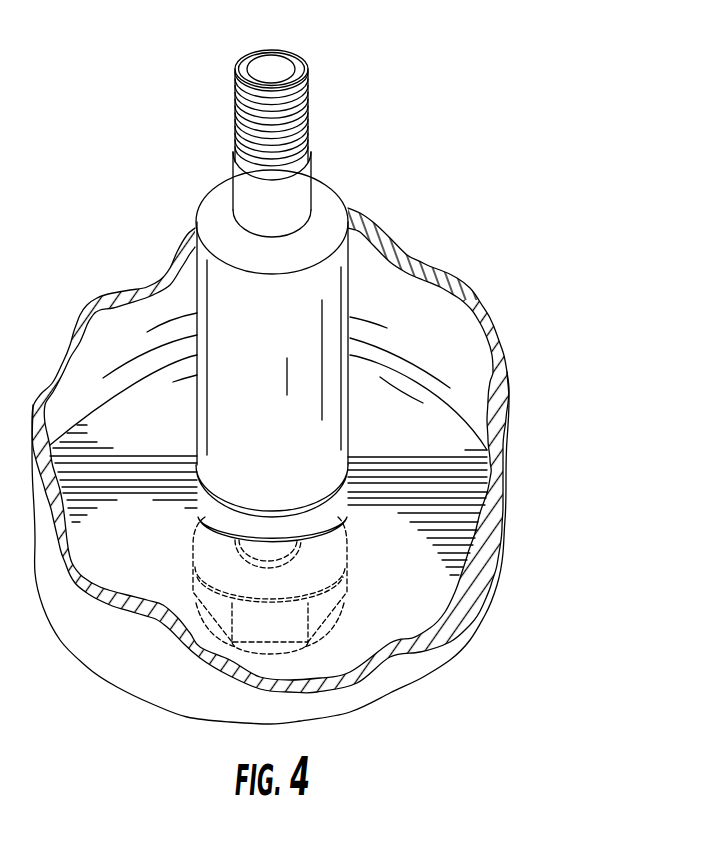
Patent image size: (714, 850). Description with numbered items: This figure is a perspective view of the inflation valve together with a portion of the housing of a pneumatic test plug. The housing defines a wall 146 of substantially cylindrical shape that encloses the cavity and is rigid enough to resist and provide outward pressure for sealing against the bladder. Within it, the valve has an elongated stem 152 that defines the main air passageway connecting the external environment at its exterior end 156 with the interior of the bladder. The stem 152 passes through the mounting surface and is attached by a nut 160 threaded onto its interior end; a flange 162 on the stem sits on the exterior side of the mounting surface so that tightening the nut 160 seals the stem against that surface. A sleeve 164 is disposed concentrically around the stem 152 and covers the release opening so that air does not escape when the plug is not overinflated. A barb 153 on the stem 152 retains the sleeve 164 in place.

The wall 146 is at (505, 358).
The stem portion 152 is at (308, 113).
The barb 153 is at (232, 165).
The exterior end 156 is at (268, 67).
The nut 160 is at (295, 633).
The flange 162 is at (325, 515).
The sleeve 164 is at (345, 200).